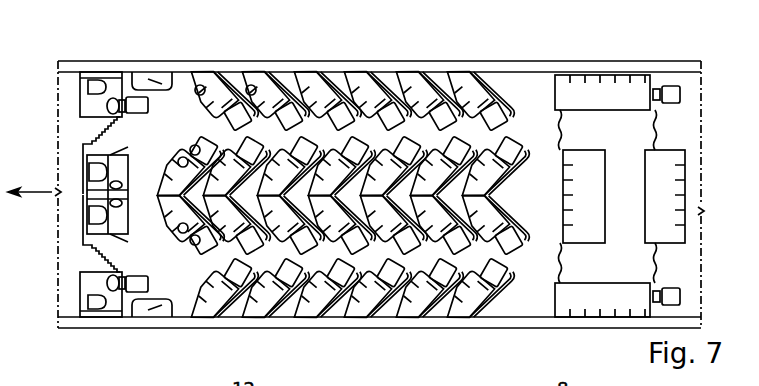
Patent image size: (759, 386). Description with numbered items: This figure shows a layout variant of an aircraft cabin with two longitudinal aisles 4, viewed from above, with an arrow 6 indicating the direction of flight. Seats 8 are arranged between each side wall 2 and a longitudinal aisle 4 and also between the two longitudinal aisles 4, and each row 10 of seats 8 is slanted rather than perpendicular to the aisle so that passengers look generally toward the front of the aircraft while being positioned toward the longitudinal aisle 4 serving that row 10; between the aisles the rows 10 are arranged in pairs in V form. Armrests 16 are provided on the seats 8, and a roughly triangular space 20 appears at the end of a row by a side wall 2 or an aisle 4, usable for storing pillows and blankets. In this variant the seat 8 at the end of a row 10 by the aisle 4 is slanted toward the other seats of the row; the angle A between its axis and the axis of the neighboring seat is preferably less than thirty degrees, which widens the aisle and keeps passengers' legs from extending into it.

The side wall 2 is at (606, 69).
The longitudinal aisle 4 is at (530, 128).
The arrow 6 is at (35, 191).
The seat 8 is at (470, 98).
The row 10 is at (185, 72).
The armrest 16 is at (318, 76).
The space 20 is at (445, 318).
The angle A is at (403, 112).